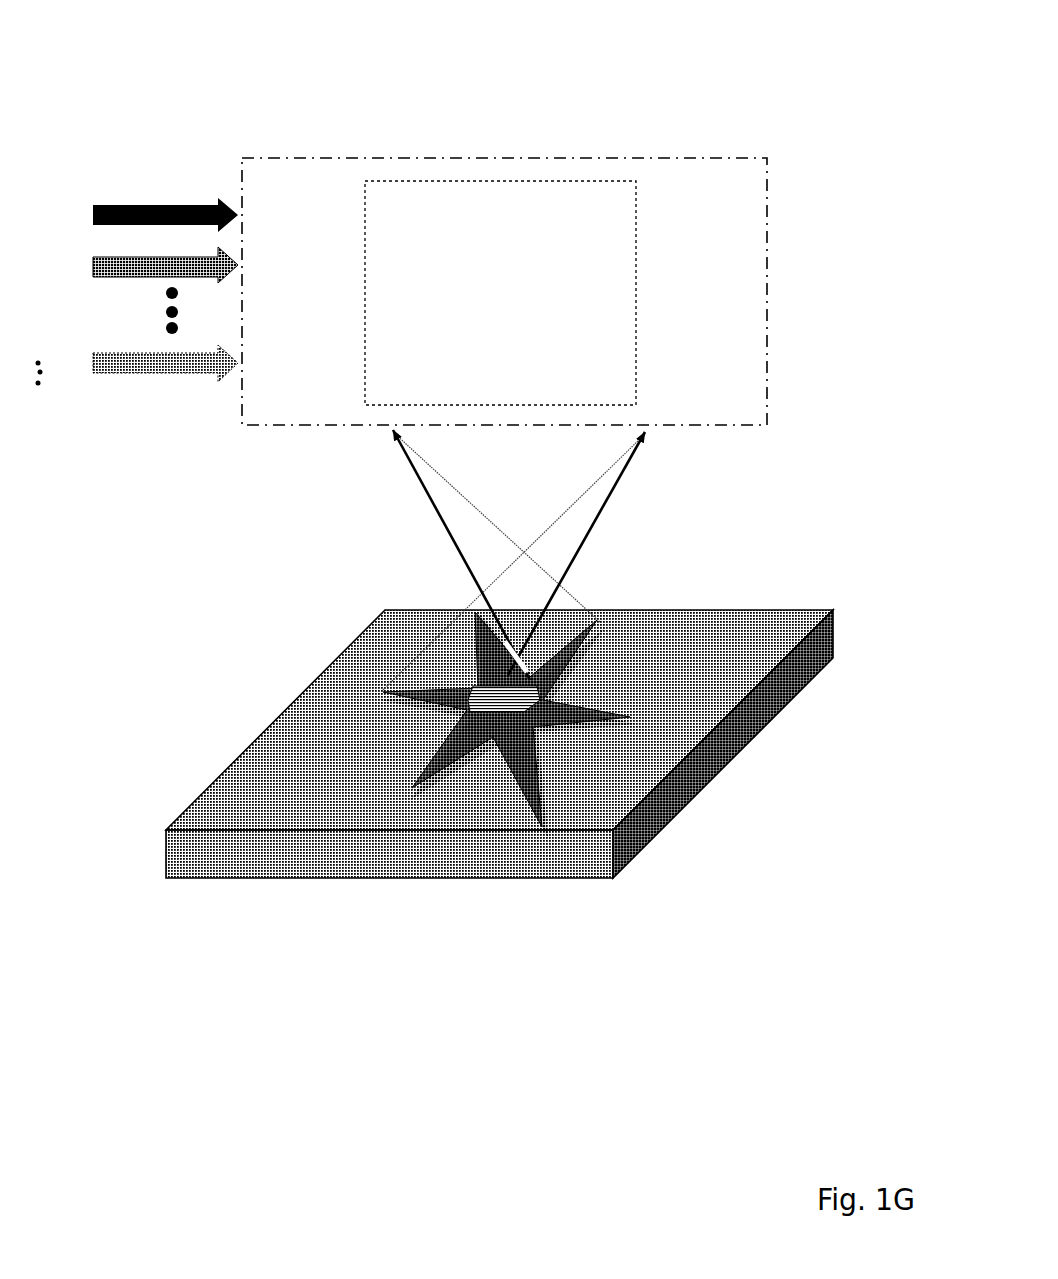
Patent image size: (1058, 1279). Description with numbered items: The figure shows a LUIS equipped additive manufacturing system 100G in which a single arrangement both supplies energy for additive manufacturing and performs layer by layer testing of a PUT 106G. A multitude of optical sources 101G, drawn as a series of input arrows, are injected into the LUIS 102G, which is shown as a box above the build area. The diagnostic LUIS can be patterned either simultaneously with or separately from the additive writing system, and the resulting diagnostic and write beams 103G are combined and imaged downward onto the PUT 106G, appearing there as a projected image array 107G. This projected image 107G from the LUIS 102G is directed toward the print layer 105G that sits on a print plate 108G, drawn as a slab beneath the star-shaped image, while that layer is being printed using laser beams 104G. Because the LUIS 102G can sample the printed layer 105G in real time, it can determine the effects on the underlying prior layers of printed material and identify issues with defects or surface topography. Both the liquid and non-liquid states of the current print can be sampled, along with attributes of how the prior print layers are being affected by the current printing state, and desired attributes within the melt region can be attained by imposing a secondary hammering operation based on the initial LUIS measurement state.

The LUIS equipped additive manufacturing system 100G is at (752, 68).
The optical sources 101G is at (92, 228).
The LUIS 102G is at (527, 281).
The diagnostic and write beams 103G is at (473, 557).
The laser beams 104G is at (460, 500).
The print layer 105G is at (440, 698).
The PUT 106G is at (417, 720).
The projected image array 107G is at (537, 732).
The print plate 108G is at (165, 845).